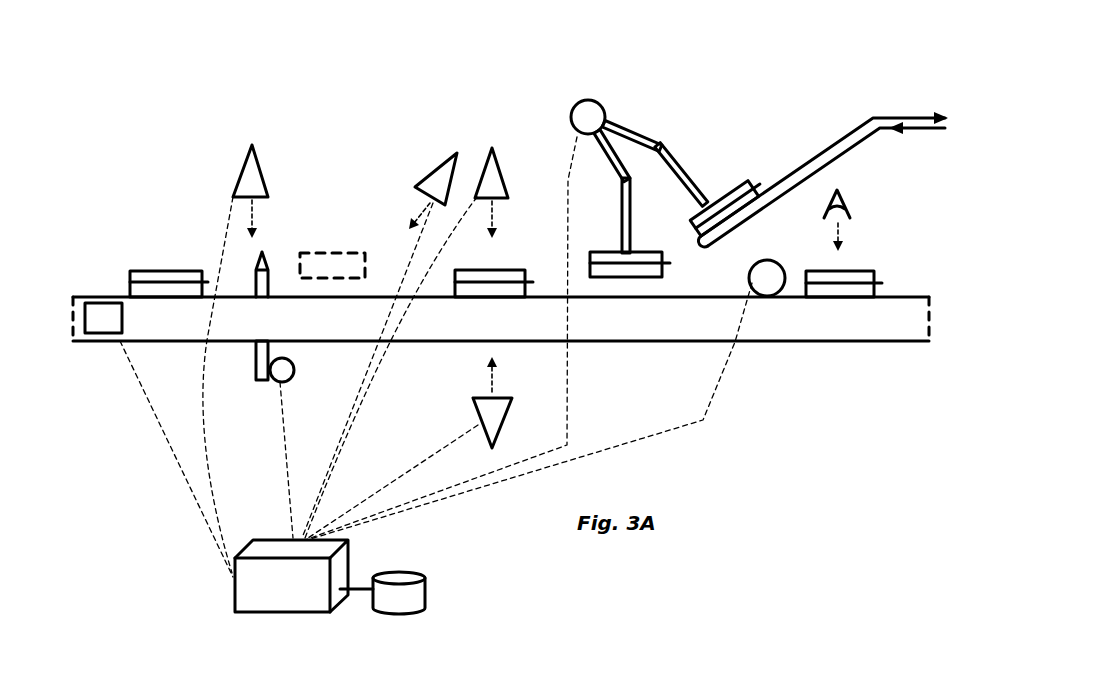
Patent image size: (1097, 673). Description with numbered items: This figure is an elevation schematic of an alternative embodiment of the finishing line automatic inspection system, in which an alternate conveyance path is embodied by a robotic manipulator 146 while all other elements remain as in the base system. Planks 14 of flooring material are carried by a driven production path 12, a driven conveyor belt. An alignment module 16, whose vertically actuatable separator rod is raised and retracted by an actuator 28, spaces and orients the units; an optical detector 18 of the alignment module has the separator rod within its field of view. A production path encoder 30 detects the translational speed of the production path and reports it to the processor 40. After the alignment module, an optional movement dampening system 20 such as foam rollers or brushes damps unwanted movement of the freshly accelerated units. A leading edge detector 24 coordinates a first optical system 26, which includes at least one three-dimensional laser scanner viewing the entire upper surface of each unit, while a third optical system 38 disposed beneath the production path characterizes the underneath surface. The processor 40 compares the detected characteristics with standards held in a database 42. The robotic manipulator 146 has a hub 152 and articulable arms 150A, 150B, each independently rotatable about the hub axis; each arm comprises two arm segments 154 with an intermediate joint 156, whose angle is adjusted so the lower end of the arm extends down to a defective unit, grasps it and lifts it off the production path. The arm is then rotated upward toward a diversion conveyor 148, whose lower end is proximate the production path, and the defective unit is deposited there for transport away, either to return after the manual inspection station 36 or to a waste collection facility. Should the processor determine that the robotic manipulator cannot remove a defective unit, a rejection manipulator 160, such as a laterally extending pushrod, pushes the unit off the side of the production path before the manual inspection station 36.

The driven production path 12 is at (91, 297).
The planks 14 is at (150, 271).
The alignment module 16 is at (257, 377).
The optical detector 18 is at (254, 160).
The movement dampening system 20 is at (313, 253).
The individual unit detector 24 is at (438, 175).
The first optical system 26 is at (487, 160).
The actuator 28 is at (294, 371).
The production path encoder 30 is at (100, 333).
The manual inspection station 36 is at (858, 213).
The third optical system 38 is at (473, 412).
The processor 40 is at (235, 600).
The database 42 is at (420, 573).
The robotic manipulator 146 is at (654, 129).
The diversion conveyor 148 is at (880, 116).
The articulable arm 150A is at (648, 133).
The articulable arm 150B is at (612, 170).
The hub 152 is at (598, 100).
The arm segments 154 is at (668, 146).
The joint 156 is at (663, 141).
The rejection manipulator 160 is at (757, 262).